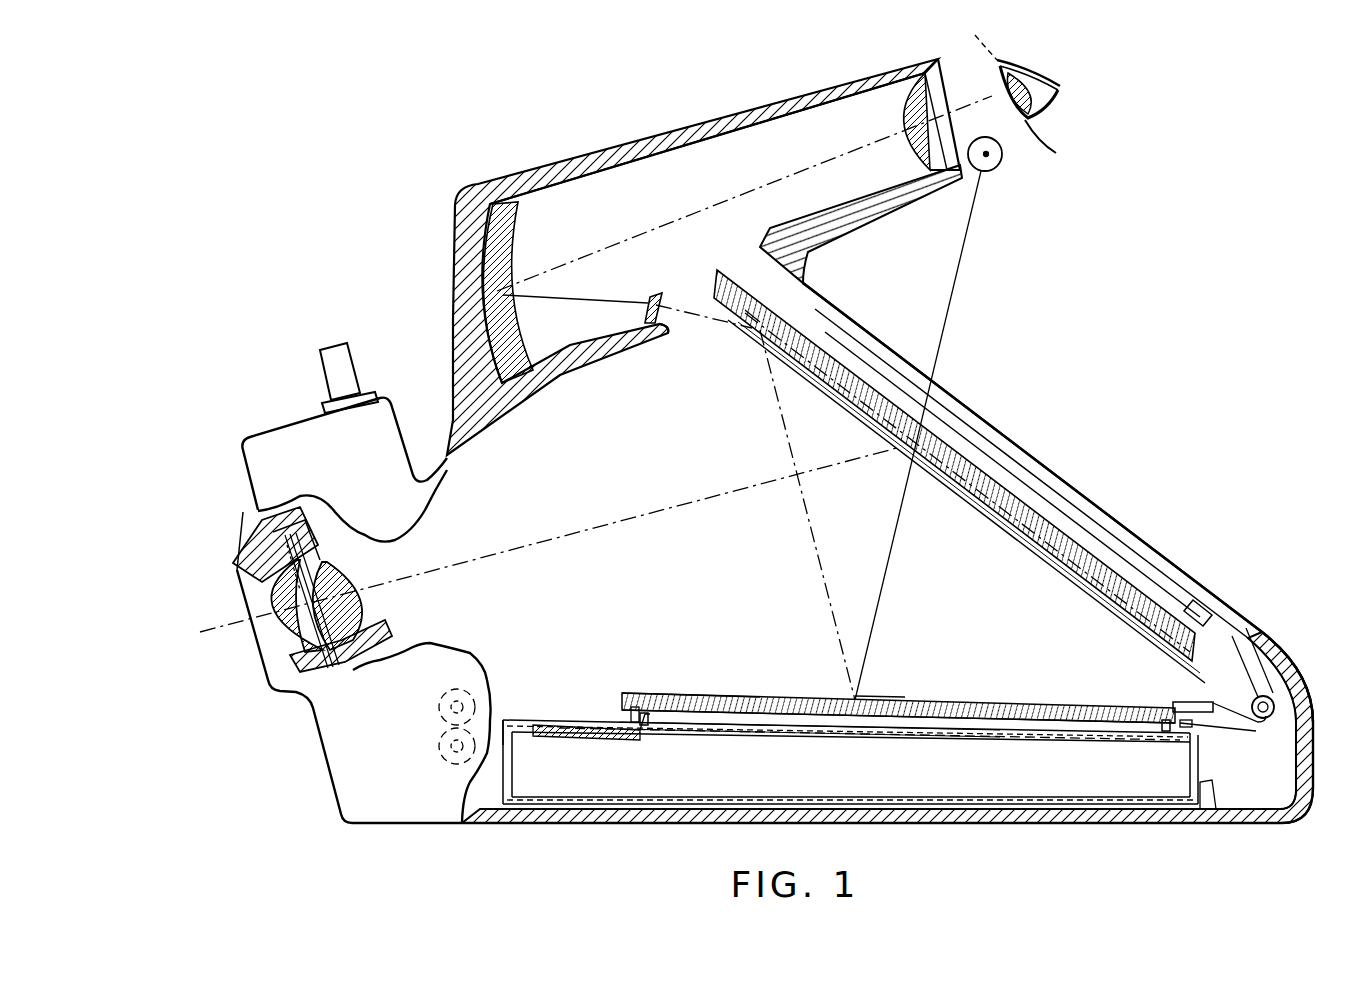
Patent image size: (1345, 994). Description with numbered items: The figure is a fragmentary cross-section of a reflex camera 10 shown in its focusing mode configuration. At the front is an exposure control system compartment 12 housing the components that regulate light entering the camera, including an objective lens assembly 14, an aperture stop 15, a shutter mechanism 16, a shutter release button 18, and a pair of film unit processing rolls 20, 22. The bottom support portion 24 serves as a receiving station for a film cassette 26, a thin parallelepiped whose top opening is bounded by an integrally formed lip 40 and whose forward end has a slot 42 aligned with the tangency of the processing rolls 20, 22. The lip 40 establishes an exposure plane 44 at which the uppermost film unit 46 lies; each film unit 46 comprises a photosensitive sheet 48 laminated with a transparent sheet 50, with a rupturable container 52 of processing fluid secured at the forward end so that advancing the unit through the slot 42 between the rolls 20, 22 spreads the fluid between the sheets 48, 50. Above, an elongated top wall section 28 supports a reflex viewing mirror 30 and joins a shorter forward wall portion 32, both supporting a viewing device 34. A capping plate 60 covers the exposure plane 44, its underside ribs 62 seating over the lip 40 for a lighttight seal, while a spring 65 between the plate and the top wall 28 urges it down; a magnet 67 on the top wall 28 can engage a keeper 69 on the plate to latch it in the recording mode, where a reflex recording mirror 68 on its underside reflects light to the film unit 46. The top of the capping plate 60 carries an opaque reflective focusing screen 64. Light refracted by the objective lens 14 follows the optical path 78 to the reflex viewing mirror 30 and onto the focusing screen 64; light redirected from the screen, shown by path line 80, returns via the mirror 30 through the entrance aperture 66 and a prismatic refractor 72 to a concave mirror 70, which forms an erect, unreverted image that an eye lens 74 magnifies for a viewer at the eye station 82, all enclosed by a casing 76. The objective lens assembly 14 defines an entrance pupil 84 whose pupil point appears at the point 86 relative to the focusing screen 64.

The reflex camera 10 is at (985, 409).
The exposure control system compartment 12 is at (242, 499).
The objective lens assembly 14 is at (237, 608).
The aperture stop 15 is at (334, 672).
The shutter mechanism 16 is at (335, 518).
The shutter release button 18 is at (341, 350).
The film unit processing roll 20 is at (437, 692).
The film unit processing roll 22 is at (437, 745).
The bottom support portion 24 is at (1092, 824).
The film cassette 26 is at (760, 777).
The top wall section 28 is at (1072, 480).
The reflex viewing mirror 30 is at (1075, 567).
The forward wall portion 32 is at (451, 455).
The viewing device 34 is at (547, 158).
The lip 40 is at (650, 727).
The slot 42 is at (505, 719).
The exposure plane 44 is at (691, 695).
The film unit 46 is at (845, 732).
The photosensitive sheet 48 is at (910, 735).
The transparent sheet 50 is at (979, 741).
The rupturable container 52 is at (578, 741).
The capping plate 60 is at (960, 506).
The ribs 62 is at (748, 340).
The opaque reflective focusing screen 64 is at (910, 472).
The spring 65 is at (1296, 668).
The entrance aperture 66 is at (698, 306).
The magnet 67 is at (1258, 636).
The reflex recording mirror 68 is at (1000, 532).
The keeper 69 is at (1206, 602).
The concave mirror 70 is at (522, 250).
The prismatic refractor 72 is at (657, 291).
The eye lens 74 is at (912, 116).
The casing 76 is at (826, 98).
The optical path 78 is at (610, 523).
The path line 80 is at (738, 196).
The eye station 82 is at (1062, 90).
The entrance pupil 84 is at (1004, 164).
The point 86 is at (989, 166).